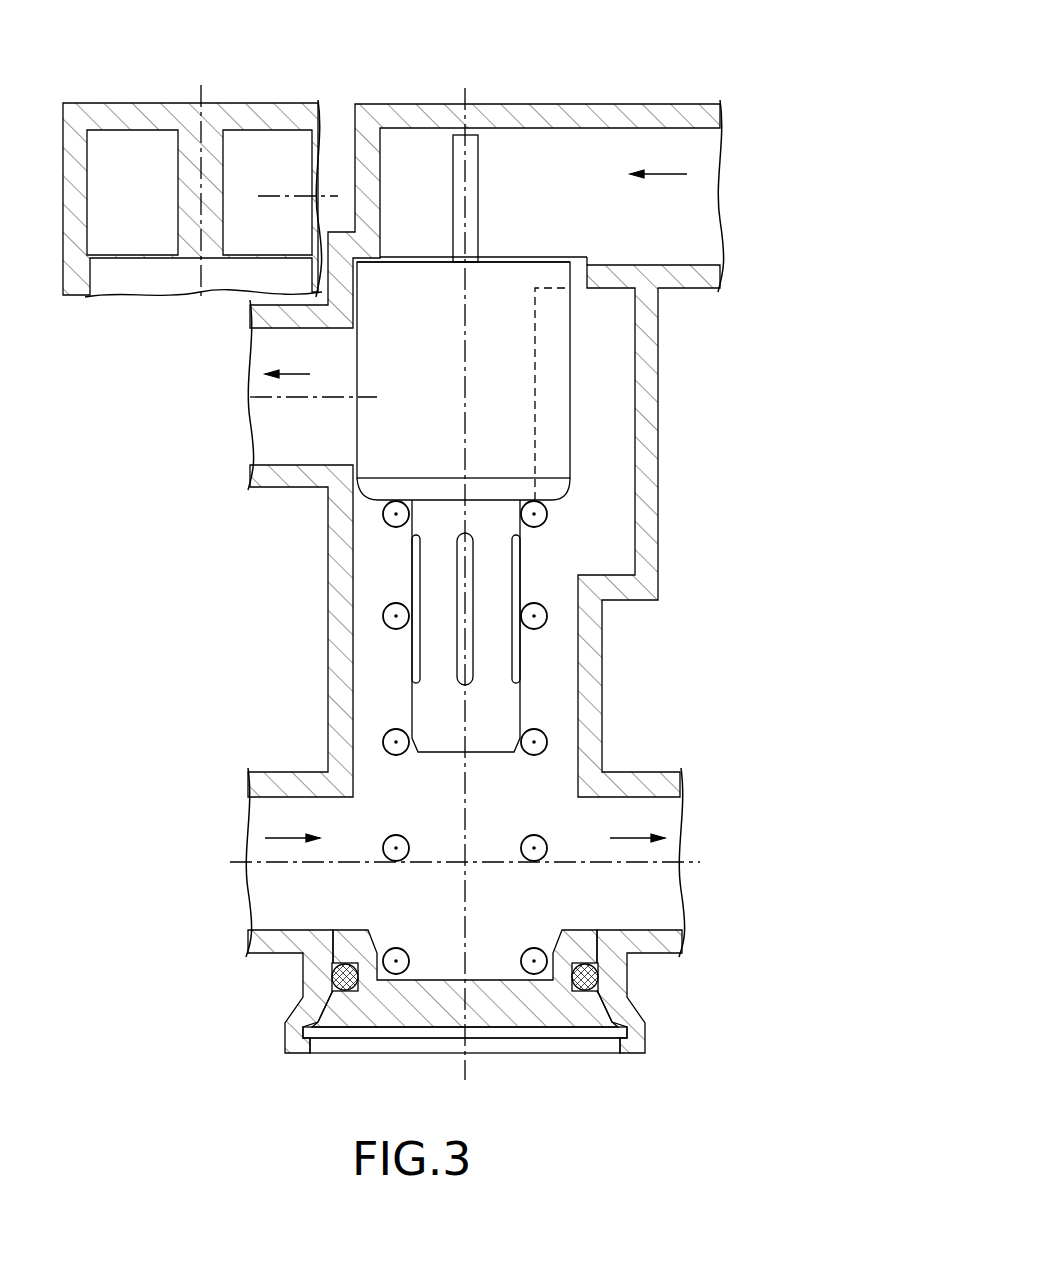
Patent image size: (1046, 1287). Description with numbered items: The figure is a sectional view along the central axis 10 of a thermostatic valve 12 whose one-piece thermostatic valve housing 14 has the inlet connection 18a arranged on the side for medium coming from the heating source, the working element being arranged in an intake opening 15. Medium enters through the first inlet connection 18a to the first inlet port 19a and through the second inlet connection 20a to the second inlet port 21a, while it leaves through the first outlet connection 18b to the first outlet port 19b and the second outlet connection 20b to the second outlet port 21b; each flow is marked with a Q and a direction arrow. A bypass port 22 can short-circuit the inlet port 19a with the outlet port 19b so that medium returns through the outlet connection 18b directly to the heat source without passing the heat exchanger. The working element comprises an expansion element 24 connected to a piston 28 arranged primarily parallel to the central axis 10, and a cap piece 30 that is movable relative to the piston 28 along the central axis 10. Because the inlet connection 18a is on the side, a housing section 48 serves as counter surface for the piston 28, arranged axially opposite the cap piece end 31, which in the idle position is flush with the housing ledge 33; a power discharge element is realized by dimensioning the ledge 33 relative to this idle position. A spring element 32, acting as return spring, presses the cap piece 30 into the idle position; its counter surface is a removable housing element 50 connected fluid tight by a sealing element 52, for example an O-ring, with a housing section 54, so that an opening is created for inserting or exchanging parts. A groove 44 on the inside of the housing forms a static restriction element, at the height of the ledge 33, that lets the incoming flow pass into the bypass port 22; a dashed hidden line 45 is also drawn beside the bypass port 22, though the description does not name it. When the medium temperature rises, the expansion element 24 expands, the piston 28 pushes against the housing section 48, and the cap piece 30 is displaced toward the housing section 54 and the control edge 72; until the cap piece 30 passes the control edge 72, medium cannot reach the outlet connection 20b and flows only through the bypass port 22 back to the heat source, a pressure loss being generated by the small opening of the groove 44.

The central axis 10 is at (468, 415).
The thermostatic valve 12 is at (490, 68).
The thermostatic valve housing 14 is at (345, 622).
The intake opening 15 is at (545, 705).
The first inlet connection 18a is at (706, 222).
The first outlet connection 18b is at (664, 856).
The first inlet port 19a is at (683, 241).
The first outlet port 19b is at (645, 911).
The second inlet connection 20a is at (264, 851).
The second outlet connection 20b is at (256, 360).
The second inlet port 21a is at (376, 911).
The second outlet port 21b is at (313, 444).
The bypass port 22 is at (615, 516).
The expansion element 24 is at (545, 668).
The piston 28 is at (470, 192).
The cap piece 30 is at (383, 441).
The cap piece end 31 is at (413, 272).
The spring element 32 is at (394, 742).
The housing ledge 33 is at (352, 250).
The groove 44 is at (577, 272).
The hidden bore 45 is at (535, 368).
The housing section 48 is at (422, 120).
The housing element 50 is at (552, 1003).
The sealing element 52 is at (587, 977).
The housing section 54 is at (620, 1012).
The control edge 72 is at (343, 320).